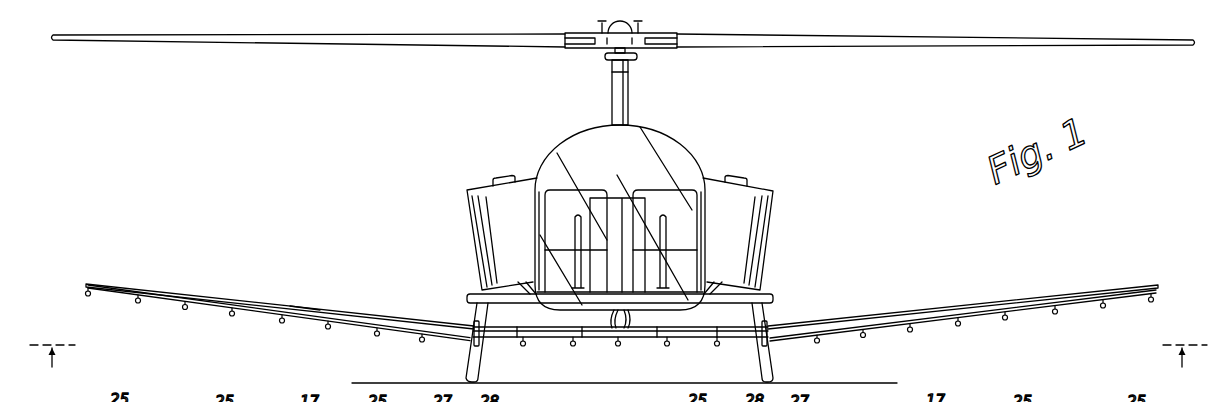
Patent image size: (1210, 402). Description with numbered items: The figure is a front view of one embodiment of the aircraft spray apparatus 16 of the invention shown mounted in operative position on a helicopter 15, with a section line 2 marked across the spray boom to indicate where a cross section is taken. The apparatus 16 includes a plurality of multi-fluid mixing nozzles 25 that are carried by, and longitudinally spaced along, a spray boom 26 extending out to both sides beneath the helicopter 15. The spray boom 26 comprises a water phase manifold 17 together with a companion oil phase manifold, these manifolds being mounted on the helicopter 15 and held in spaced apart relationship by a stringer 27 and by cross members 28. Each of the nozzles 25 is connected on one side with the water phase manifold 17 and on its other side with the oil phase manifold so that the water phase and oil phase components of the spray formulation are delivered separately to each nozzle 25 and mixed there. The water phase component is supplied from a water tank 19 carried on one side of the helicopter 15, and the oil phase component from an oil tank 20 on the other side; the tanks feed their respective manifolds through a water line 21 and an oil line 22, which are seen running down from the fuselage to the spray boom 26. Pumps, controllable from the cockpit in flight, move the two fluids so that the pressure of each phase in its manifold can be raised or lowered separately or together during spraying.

The helicopter 15 is at (667, 126).
The aircraft spray apparatus 16 is at (779, 278).
The water phase manifold 17 is at (449, 342).
The water tank 19 is at (470, 253).
The oil tank 20 is at (775, 211).
The water line 21 is at (611, 327).
The oil line 22 is at (624, 329).
The multi-fluid mixing nozzle 25 is at (136, 304).
The spray boom 26 is at (304, 302).
The stringer 27 is at (398, 318).
The cross member 28 is at (512, 337).
The section line 2- 2 is at (618, 372).